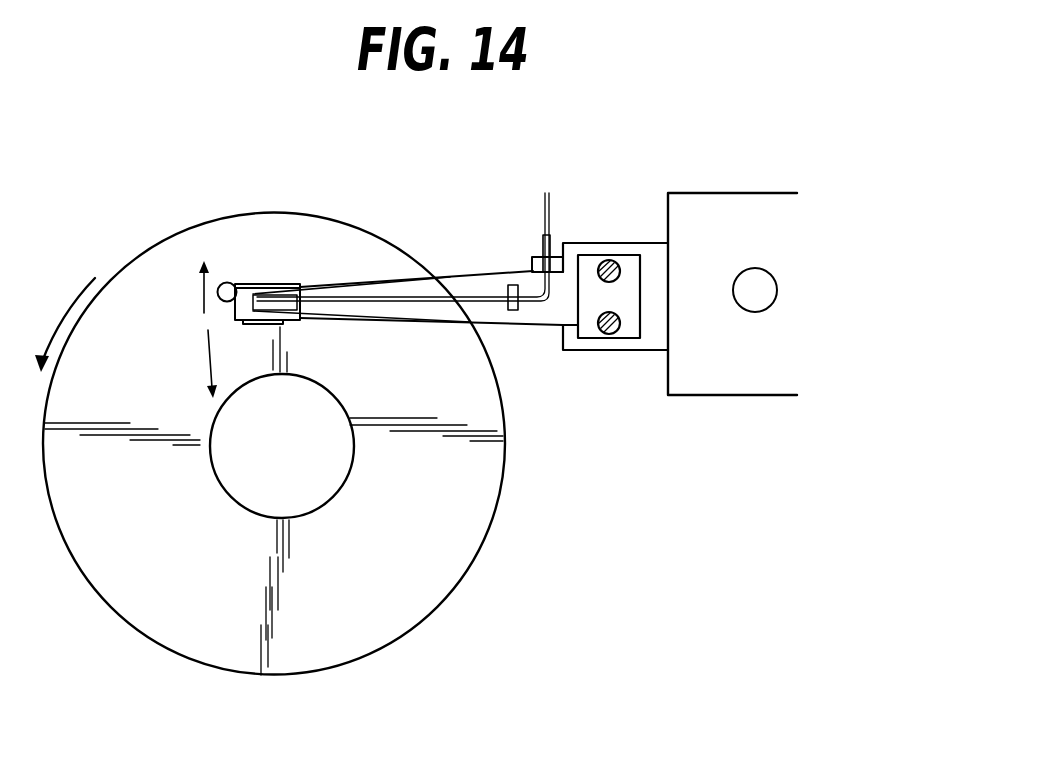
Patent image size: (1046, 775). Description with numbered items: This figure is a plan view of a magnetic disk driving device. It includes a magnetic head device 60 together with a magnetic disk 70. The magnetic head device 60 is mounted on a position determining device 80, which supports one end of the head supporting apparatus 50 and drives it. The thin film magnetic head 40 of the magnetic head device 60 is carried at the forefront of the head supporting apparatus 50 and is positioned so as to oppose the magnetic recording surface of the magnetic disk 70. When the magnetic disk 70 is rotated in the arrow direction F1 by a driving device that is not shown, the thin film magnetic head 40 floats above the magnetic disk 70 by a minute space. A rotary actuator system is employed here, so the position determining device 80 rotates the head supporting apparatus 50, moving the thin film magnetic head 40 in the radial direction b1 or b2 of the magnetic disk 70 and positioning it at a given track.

The thin film magnetic head 40 is at (262, 282).
The head supporting apparatus 50 is at (448, 282).
The magnetic head device 60 is at (526, 343).
The magnetic disk 70 is at (457, 577).
The position determining device 80 is at (753, 375).
The disk rotation direction F1 is at (75, 297).
The radial direction b1 is at (208, 348).
The radial direction b2 is at (203, 297).